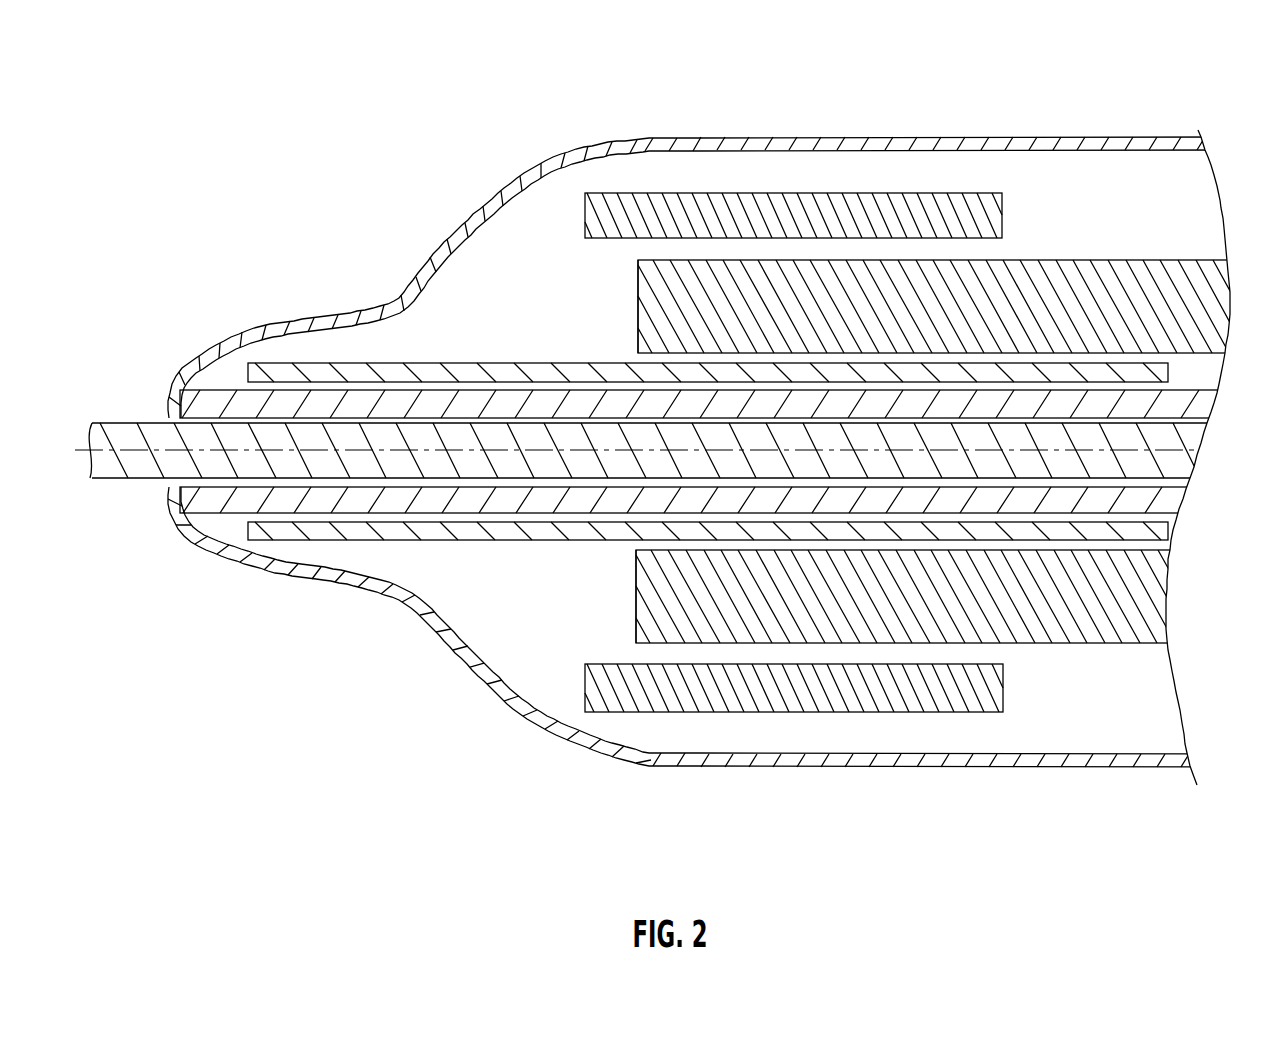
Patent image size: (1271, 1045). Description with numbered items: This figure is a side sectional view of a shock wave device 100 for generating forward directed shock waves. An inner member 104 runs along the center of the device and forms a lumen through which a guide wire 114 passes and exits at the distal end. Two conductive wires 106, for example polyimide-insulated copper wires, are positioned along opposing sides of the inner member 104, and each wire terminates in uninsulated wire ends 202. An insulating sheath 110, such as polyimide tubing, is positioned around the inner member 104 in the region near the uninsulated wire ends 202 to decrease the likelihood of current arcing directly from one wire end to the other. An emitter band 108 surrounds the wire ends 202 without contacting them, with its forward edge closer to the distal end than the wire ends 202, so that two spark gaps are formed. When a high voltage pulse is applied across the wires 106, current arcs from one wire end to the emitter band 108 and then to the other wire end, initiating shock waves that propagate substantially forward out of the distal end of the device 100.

The shock wave device 100 is at (162, 84).
The inner member 104 is at (229, 398).
The insulated conductive wires 106 is at (1117, 782).
The emitter band 108 is at (722, 202).
The insulating sheath 110 is at (292, 542).
The guide wire 114 is at (122, 432).
The uninsulated wire ends 202 is at (445, 683).